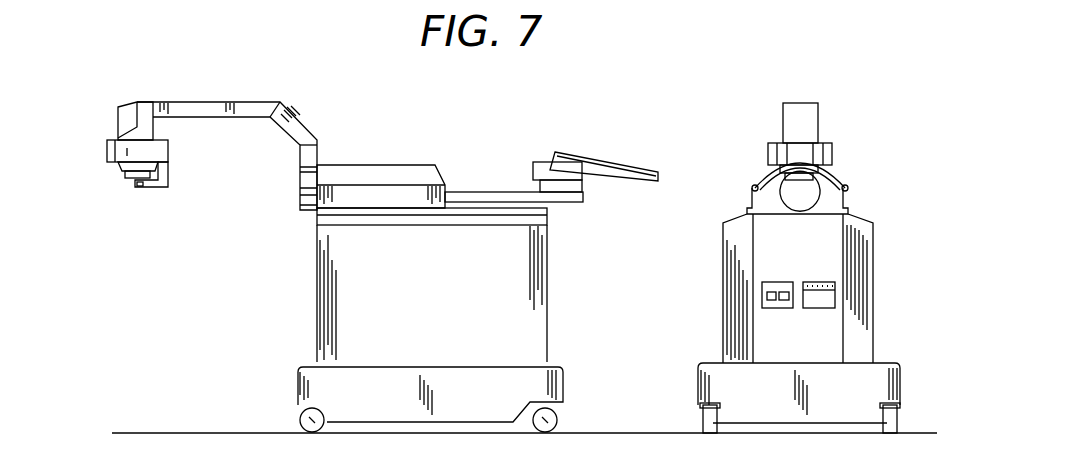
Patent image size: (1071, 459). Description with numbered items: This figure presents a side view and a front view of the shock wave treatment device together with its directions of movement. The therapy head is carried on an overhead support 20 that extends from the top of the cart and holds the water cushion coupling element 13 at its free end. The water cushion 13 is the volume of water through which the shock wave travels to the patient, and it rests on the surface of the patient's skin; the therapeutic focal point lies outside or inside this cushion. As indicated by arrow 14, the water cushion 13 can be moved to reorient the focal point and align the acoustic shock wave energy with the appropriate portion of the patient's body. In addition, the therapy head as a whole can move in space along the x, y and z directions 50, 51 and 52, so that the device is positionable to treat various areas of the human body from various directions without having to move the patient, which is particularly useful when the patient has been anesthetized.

The support arm / column 20 is at (122, 112).
The water cushion coupling element 13 is at (160, 172).
The arrow 14 is at (125, 184).
The x direction 50 is at (453, 345).
The y direction 51 is at (830, 347).
The z direction 52 is at (798, 218).